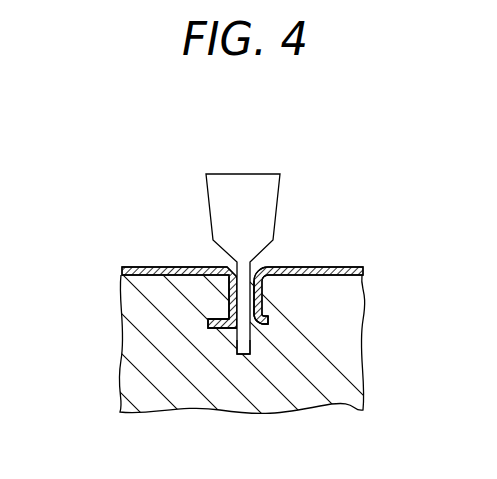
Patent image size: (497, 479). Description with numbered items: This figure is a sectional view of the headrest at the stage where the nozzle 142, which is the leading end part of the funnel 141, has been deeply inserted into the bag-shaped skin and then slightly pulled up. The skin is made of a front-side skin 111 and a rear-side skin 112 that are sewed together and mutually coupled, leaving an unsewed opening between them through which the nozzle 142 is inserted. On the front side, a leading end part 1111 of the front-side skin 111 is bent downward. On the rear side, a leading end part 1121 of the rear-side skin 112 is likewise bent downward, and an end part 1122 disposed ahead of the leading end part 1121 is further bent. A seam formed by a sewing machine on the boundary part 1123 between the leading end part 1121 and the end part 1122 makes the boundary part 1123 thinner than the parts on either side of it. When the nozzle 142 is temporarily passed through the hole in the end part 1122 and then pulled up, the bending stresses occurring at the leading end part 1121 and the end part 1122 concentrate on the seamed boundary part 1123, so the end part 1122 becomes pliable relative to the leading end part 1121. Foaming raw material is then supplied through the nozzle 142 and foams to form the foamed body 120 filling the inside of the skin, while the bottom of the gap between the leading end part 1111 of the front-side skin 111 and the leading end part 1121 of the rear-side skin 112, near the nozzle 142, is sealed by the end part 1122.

The front-side skin 111 is at (138, 290).
The rear-side skin 112 is at (351, 281).
The foamed body 120 is at (342, 377).
The funnel 141 is at (275, 315).
The nozzle 142 is at (243, 348).
The leading end part 1111 is at (234, 296).
The leading end part 1121 is at (262, 290).
The end part 1122 is at (215, 328).
The boundary part 1123 is at (268, 326).